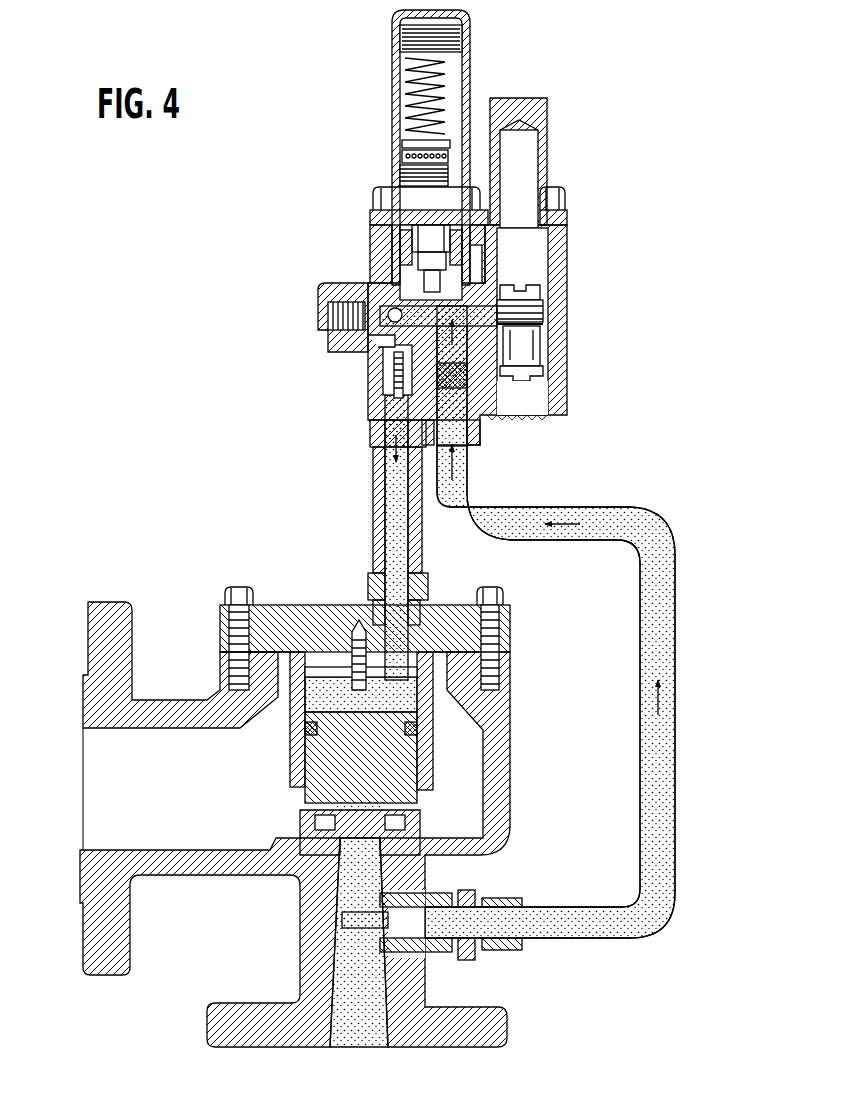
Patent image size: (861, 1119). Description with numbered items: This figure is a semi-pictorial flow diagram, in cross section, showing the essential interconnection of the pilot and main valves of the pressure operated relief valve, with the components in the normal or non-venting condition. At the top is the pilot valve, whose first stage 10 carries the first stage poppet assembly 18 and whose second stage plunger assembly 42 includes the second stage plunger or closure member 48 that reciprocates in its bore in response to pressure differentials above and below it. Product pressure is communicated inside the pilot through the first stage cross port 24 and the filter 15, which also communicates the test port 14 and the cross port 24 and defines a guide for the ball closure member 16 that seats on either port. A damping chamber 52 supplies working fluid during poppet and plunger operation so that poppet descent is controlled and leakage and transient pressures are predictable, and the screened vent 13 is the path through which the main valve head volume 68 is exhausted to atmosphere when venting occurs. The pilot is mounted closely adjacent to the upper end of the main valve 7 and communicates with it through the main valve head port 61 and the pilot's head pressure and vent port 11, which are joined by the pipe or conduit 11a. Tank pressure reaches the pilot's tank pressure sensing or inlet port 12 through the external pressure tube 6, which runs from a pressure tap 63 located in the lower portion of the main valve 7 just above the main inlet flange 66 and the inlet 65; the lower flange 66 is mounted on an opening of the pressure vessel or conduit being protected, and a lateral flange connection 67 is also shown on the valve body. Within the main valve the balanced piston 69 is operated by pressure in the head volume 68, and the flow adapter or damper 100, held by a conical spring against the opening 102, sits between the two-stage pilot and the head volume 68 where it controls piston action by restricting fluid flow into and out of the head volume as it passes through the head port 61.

The external pressure tube 6 is at (686, 616).
The main valve 7 is at (242, 1045).
The first stage 10 is at (480, 30).
The main valve head pressure and vent port 11 is at (377, 408).
The pipe or conduit 11a is at (373, 520).
The tank pressure sensing or inlet port 12 is at (458, 462).
The screened vent 13 is at (523, 403).
The test port 14 is at (330, 320).
The filter 15 is at (380, 318).
The ball closure member 16 is at (393, 308).
The first stage poppet assembly 18 is at (400, 158).
The pilot valve first stage cross port 24 is at (478, 285).
The second stage plunger assembly 42 is at (550, 318).
The second stage plunger or closure member 48 is at (540, 286).
The damping chamber 52 is at (525, 153).
The main valve head port 61 is at (420, 590).
The pressure tap 63 is at (432, 958).
The inlet 65 is at (358, 1048).
The main inlet flange 66 is at (470, 1047).
The inlet flange 67 is at (90, 815).
The main valve head volume 68 is at (360, 706).
The balanced piston 69 is at (374, 767).
The flow adapter or damper 100 is at (384, 388).
The opening 102 is at (368, 363).